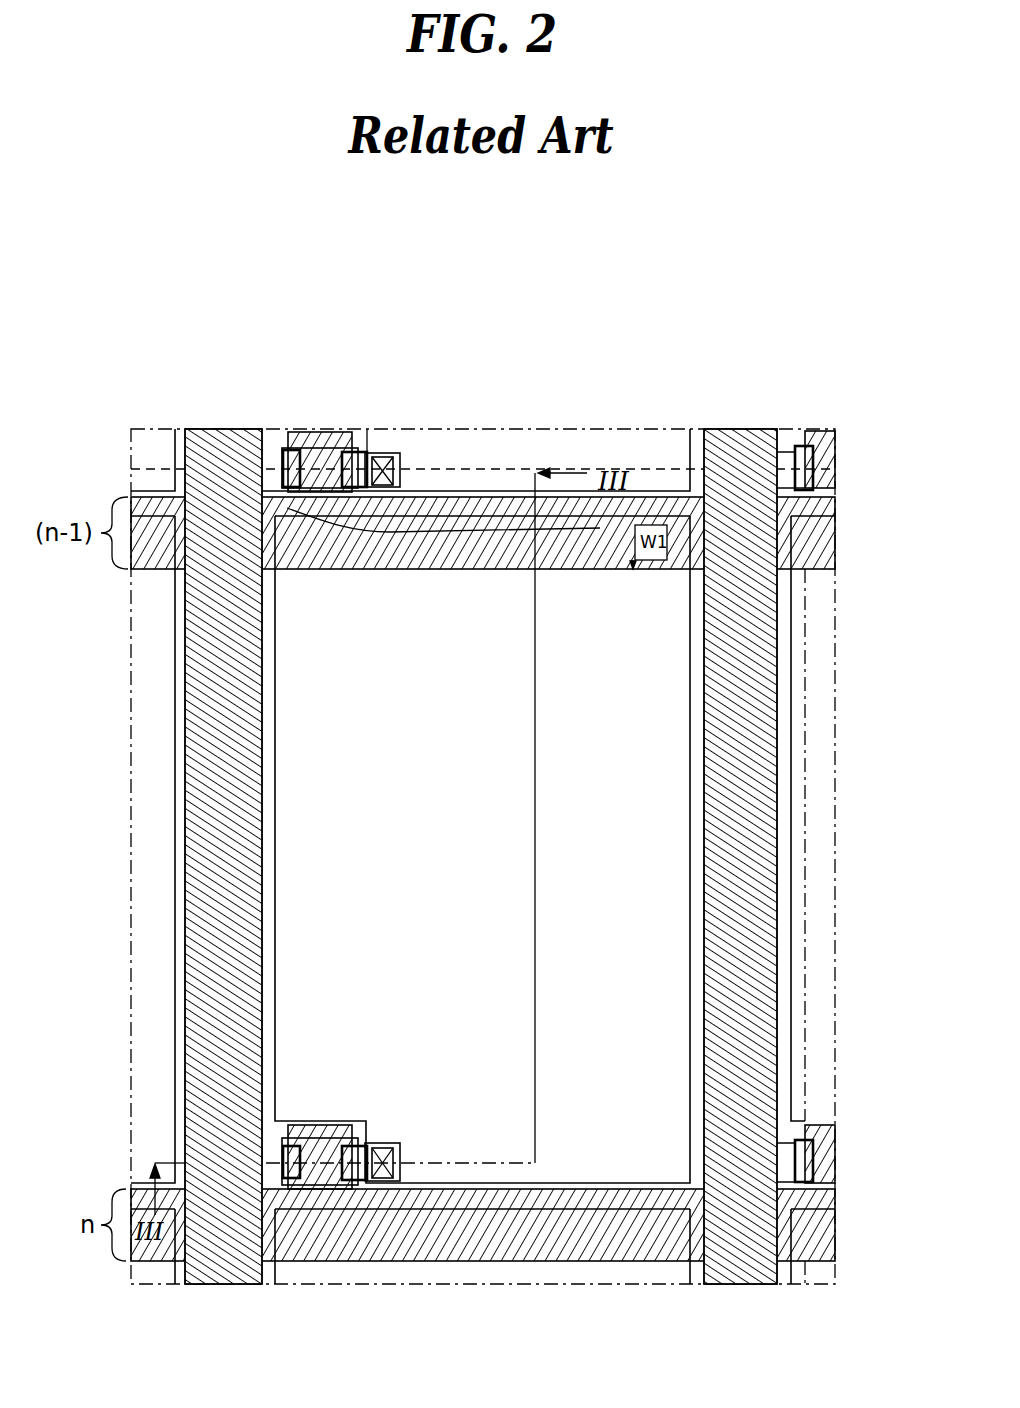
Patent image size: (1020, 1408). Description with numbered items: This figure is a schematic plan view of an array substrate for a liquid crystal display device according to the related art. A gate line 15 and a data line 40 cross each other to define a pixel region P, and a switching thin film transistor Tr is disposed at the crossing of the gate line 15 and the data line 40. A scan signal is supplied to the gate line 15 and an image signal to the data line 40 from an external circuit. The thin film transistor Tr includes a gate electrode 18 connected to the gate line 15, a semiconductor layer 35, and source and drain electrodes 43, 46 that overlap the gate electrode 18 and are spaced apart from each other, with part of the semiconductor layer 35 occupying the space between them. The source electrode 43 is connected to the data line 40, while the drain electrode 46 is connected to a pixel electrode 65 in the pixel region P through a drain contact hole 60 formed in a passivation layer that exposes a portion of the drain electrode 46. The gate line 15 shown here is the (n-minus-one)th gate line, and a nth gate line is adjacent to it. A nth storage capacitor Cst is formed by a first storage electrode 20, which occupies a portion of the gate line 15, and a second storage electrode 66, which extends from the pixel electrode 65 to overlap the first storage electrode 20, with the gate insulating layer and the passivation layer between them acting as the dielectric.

The gate line 15 is at (828, 538).
The gate electrode 18 is at (307, 1126).
The first storage electrode 20 is at (478, 497).
The semiconductor layer 35 is at (363, 1145).
The data line 40 is at (200, 853).
The source electrode 43 is at (276, 1195).
The drain electrode 46 is at (335, 1190).
The drain contact hole 60 is at (409, 1129).
The pixel electrode 65 is at (278, 1026).
The second storage electrode 66 is at (563, 528).
The pixel region P is at (290, 705).
The thin film transistor Tr is at (358, 1185).
The storage capacitor Cst is at (418, 480).